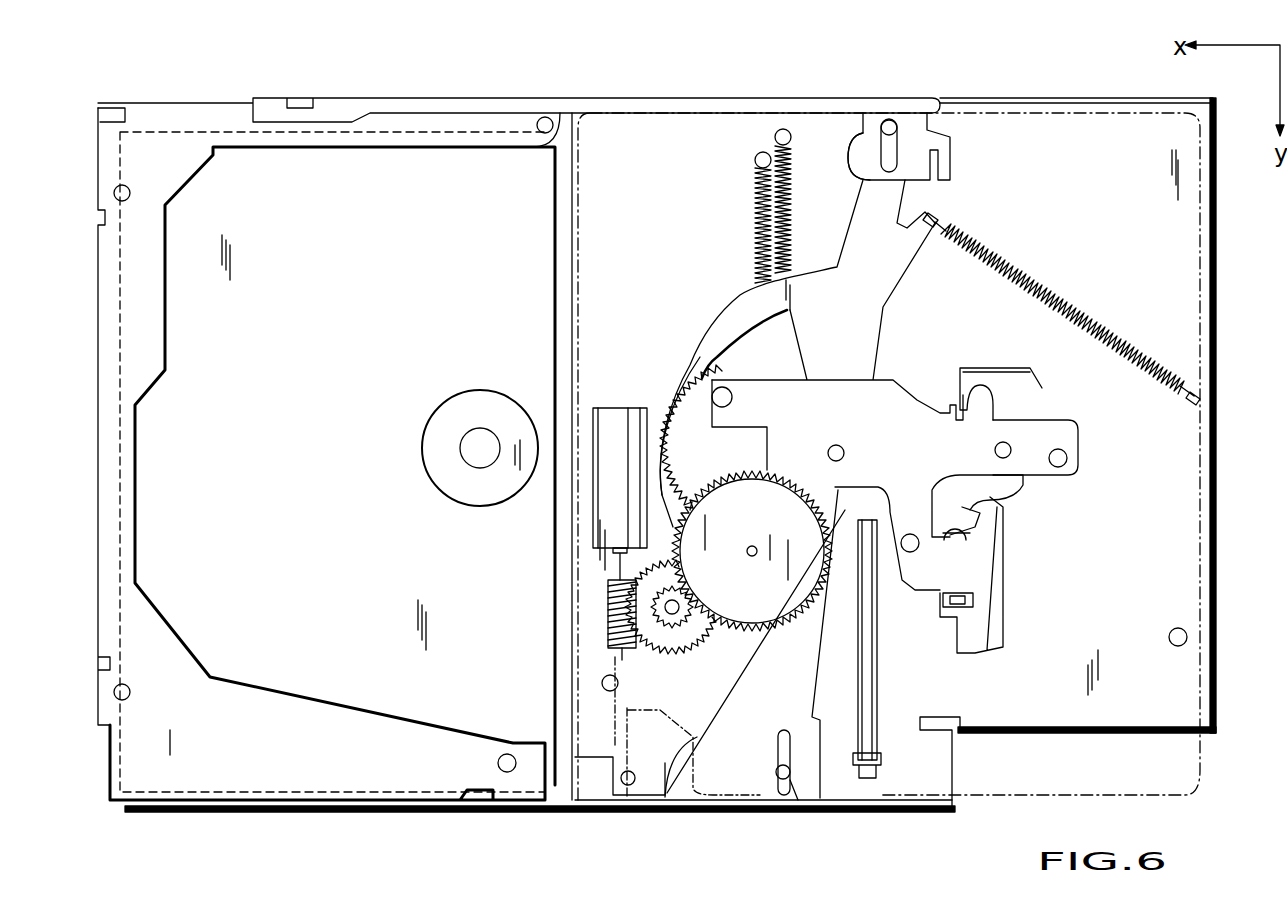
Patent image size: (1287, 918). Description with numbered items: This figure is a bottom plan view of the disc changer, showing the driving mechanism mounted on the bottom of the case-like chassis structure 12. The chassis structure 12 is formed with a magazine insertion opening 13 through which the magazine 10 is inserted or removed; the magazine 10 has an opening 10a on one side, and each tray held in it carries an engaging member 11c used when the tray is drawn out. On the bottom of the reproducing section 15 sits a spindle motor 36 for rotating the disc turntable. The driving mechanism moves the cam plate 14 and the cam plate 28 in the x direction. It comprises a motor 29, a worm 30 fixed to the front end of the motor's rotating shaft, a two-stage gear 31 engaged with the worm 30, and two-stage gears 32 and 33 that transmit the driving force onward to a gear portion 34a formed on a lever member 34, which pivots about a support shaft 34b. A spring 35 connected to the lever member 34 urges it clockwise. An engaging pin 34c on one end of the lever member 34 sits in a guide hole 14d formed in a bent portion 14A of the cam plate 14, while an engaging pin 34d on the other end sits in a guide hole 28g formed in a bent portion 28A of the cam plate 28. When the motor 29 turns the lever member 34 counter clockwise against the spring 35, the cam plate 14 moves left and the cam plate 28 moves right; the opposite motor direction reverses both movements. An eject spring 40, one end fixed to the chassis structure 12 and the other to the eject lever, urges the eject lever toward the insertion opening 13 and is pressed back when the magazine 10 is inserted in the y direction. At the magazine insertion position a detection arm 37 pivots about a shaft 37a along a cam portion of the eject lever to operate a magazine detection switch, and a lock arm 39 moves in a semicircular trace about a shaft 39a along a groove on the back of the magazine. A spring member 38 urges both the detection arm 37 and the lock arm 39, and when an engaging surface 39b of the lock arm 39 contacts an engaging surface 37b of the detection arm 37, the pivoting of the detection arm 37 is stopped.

The magazine 10 is at (1035, 100).
The opening 10a is at (580, 247).
The engaging member 11c is at (650, 797).
The chassis structure 12 is at (1105, 100).
The magazine insertion opening 13 is at (960, 94).
The cam plate 14 is at (597, 96).
The bent portion 14A is at (947, 157).
The guide hole 14d is at (880, 148).
The reproducing section 15 is at (297, 484).
The cam plate 28 is at (600, 813).
The bent portion 28A is at (735, 800).
The guide hole 28g is at (800, 800).
The motor 29 is at (625, 420).
The worm 30 is at (606, 592).
The two-stage gear 31 is at (697, 650).
The two-stage gear 32 is at (760, 636).
The two-stage gear 33 is at (740, 455).
The lever member 34 is at (876, 276).
The gear portion 34a is at (702, 385).
The support shaft 34b is at (835, 445).
The engaging pin 34c is at (888, 118).
The engaging pin 34d is at (778, 772).
The spring 35 is at (1062, 288).
The spindle motor 36 is at (475, 392).
The detection arm 37 is at (990, 370).
The shaft 37a is at (1033, 478).
The engaging surface 37b is at (980, 525).
The spring member 38 is at (935, 488).
The lock arm 39 is at (985, 590).
The shaft 39a is at (945, 593).
The engaging surface 39b is at (1003, 515).
The eject spring 40 is at (760, 230).